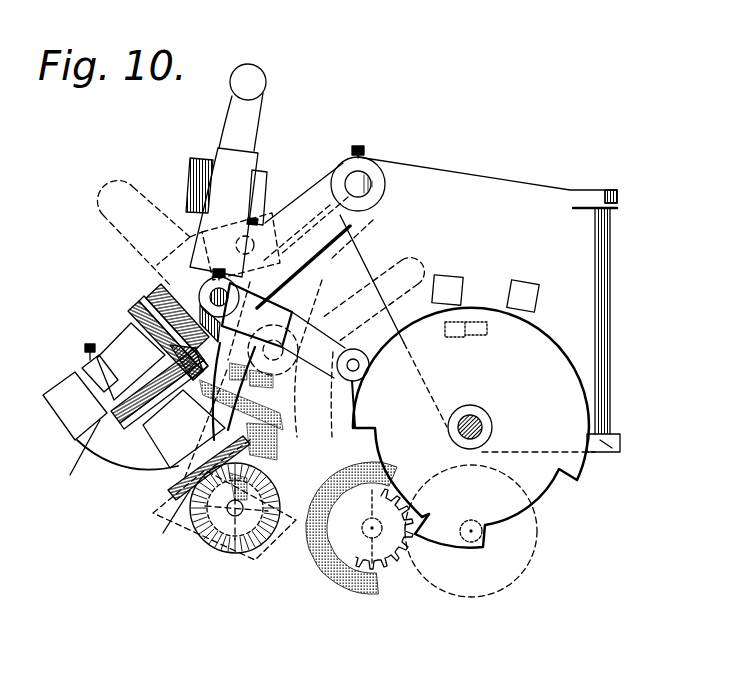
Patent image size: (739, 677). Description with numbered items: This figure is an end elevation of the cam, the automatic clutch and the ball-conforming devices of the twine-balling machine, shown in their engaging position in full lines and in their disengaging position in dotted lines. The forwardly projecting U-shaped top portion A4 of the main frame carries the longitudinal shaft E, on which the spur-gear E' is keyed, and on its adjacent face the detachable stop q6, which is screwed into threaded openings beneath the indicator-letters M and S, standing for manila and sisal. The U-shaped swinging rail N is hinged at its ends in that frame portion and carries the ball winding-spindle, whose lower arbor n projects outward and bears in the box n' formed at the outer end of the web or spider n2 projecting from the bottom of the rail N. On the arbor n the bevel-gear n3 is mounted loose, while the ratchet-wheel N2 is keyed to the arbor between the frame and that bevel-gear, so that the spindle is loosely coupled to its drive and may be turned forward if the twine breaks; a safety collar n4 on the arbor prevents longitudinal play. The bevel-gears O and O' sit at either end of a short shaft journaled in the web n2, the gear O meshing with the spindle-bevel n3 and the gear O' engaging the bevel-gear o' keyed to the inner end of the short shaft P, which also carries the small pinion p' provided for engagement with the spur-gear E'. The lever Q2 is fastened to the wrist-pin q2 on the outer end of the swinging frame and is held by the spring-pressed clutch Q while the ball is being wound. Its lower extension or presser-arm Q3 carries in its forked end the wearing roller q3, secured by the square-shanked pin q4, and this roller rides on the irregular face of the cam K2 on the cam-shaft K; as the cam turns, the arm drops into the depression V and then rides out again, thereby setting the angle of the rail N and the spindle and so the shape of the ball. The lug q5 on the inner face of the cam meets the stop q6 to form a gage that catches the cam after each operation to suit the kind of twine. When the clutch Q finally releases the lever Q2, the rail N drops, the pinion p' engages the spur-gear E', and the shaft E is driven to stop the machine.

The clutch-lever Q2 is at (240, 252).
The clutch Q is at (190, 176).
The U-shape top portion of main frame A4 is at (489, 304).
The swinging rail N is at (303, 263).
The notched disk K2 is at (471, 428).
The pawl lever V is at (392, 472).
The disk shaft K is at (492, 429).
The stop or lug q5 is at (486, 331).
The detachable stop q6 is at (452, 337).
The indicator-letter M is at (447, 290).
The indicator-letter S is at (523, 296).
The longitudinal shaft E is at (482, 531).
The spur-gear E' is at (399, 566).
The pinion p' is at (351, 543).
The short longitudinal shaft P is at (233, 510).
The bevel-gear o' is at (247, 535).
The bevel-gear O' is at (169, 525).
The ratchet-wheel N2 is at (163, 300).
The wrist-pin q2 is at (217, 299).
The extension-arm Q3 is at (318, 353).
The wearing roller q3 is at (369, 372).
The square-shanked pin q4 is at (349, 404).
The bevel-gear n3 is at (139, 305).
The safety collar n4 is at (131, 361).
The spindle-arbor n is at (75, 367).
The box n' is at (75, 406).
The bevel-gear O is at (76, 459).
The web or spider n2 is at (127, 452).